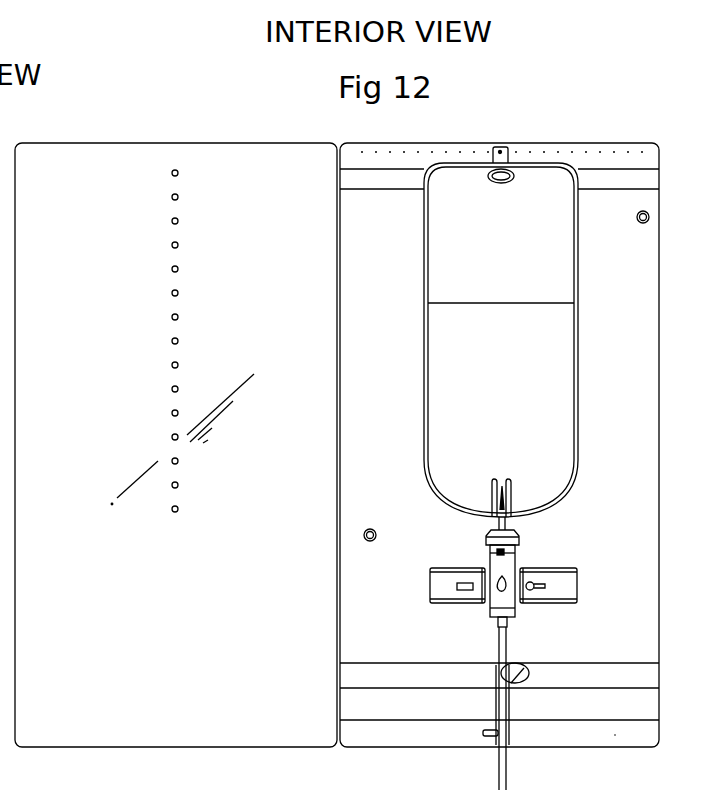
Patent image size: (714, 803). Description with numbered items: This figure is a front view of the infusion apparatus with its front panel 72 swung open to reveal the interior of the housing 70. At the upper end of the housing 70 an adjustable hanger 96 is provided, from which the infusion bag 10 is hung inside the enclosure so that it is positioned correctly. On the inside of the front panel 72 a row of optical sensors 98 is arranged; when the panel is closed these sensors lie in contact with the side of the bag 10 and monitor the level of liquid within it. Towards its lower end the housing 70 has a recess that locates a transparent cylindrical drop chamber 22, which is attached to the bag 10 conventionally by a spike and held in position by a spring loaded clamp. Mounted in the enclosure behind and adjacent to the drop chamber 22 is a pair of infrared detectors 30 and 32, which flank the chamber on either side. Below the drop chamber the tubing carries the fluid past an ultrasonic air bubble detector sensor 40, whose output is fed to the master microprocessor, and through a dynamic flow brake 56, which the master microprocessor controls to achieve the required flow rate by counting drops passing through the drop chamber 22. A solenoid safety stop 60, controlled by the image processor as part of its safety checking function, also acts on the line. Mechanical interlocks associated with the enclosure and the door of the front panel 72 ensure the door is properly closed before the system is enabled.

The infusion bag 10 is at (578, 412).
The drop chamber 22 is at (516, 558).
The infrared detector 30 is at (443, 567).
The infrared detector 32 is at (548, 604).
The ultrasonic air bubble detector sensor 40 is at (515, 707).
The dynamic flow brake 56 is at (516, 664).
The solenoid safety stop 60 is at (477, 734).
The housing 70 is at (660, 528).
The front panel 72 is at (179, 737).
The adjustable hanger 96 is at (510, 158).
The optical sensors 98 is at (179, 268).